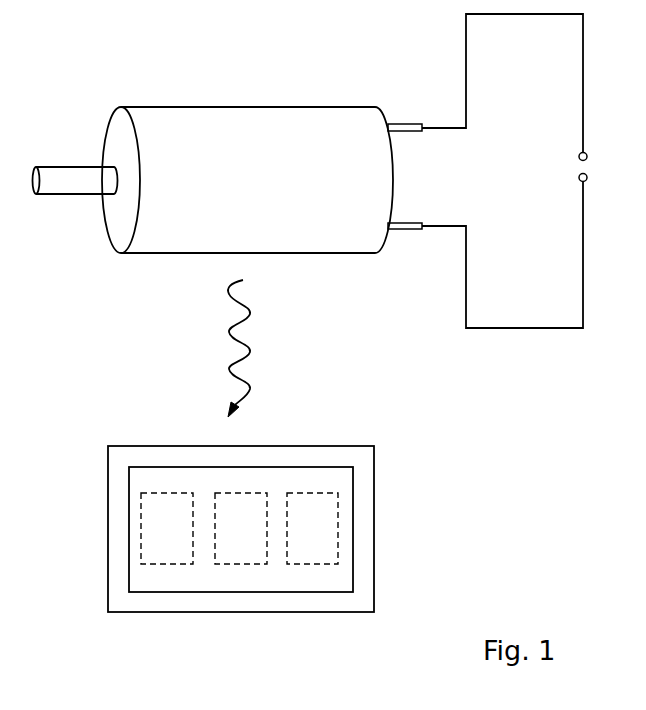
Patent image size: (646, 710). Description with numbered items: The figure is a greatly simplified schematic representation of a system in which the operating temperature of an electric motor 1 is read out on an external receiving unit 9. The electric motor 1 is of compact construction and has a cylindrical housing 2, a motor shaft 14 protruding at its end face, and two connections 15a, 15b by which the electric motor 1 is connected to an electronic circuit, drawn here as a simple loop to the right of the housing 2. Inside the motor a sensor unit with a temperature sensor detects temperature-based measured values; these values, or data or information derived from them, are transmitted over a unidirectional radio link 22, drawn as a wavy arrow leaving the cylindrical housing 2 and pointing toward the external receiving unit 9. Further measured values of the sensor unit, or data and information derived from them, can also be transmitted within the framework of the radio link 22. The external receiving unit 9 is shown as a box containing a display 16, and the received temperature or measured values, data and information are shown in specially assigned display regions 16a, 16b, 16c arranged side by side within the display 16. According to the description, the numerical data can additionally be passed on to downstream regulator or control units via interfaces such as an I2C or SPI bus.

The electric motor 1 is at (258, 68).
The cylindrical housing 2 is at (181, 150).
The motor shaft 14 is at (55, 165).
The connection 15a is at (403, 129).
The connection 15b is at (408, 227).
The unidirectional radio link 22 is at (222, 363).
The external receiving unit 9 is at (121, 470).
The display 16 is at (152, 584).
The display region 16a is at (178, 542).
The display region 16b is at (247, 550).
The display region 16c is at (322, 548).